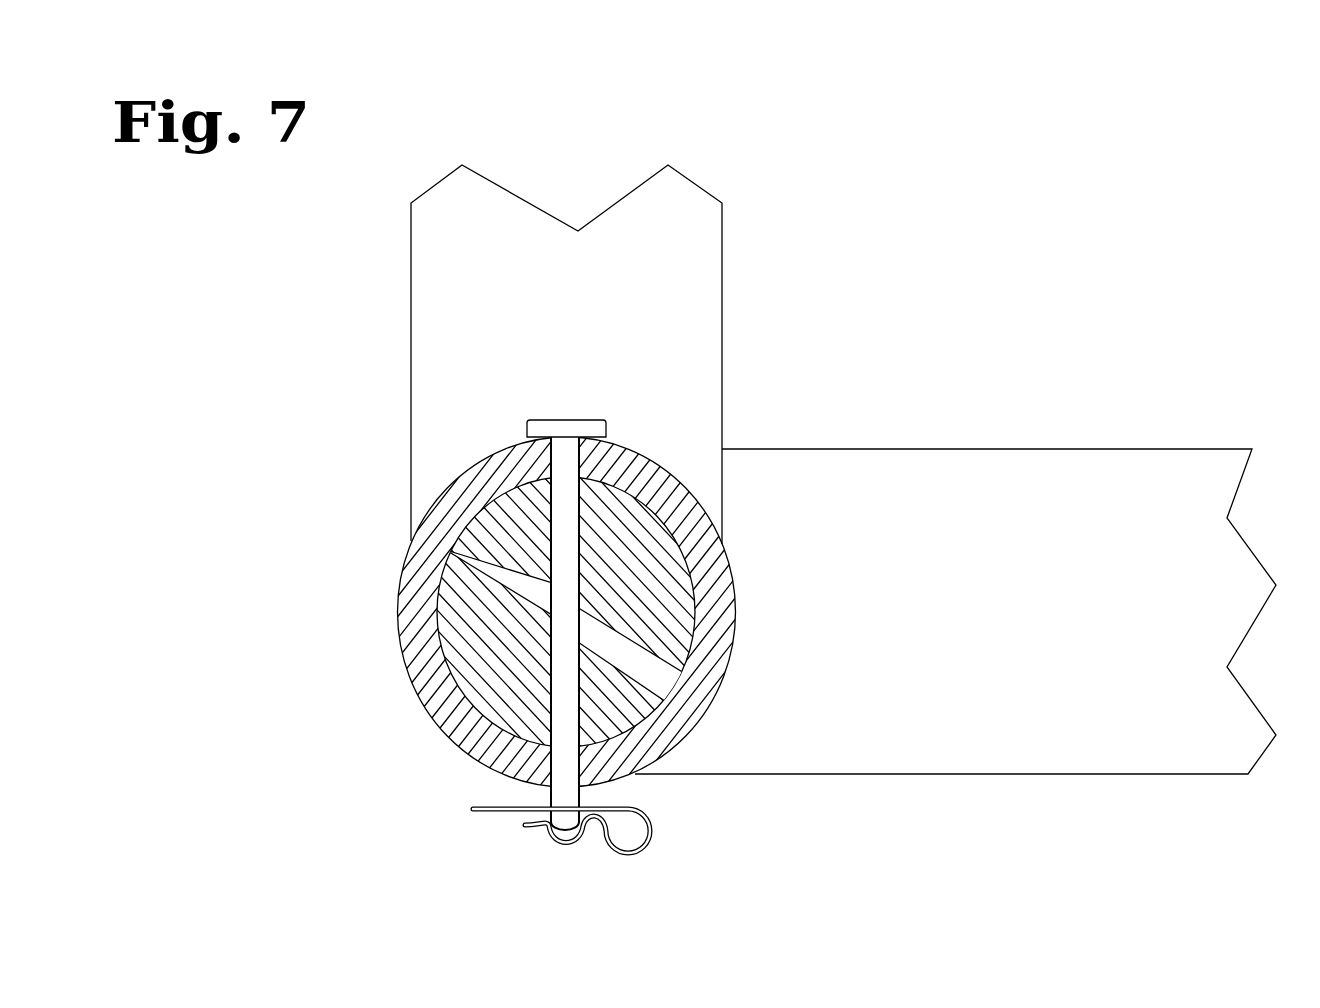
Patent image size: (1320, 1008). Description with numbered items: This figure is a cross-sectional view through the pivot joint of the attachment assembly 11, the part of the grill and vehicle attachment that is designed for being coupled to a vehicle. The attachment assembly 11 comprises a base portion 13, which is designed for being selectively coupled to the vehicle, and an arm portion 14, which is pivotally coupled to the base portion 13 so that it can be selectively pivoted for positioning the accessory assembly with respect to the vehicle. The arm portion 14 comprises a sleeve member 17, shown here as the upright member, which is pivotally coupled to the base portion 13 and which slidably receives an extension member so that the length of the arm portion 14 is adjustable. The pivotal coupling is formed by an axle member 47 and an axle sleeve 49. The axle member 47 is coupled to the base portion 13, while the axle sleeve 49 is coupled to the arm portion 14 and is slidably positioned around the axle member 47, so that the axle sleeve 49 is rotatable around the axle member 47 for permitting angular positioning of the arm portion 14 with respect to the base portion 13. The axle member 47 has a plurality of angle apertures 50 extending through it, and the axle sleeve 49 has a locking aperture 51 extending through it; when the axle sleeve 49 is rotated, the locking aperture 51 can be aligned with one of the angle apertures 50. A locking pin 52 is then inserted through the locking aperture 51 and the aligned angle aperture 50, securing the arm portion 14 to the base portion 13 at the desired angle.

The attachment assembly 11 is at (942, 245).
The base portion 13 is at (1000, 730).
The arm portion 14 is at (411, 250).
The sleeve member 17 is at (527, 321).
The axle member 47 is at (491, 759).
The axle sleeve 49 is at (412, 612).
The angle apertures 50 is at (477, 548).
The locking aperture 51 is at (582, 453).
The locking pin 52 is at (566, 426).